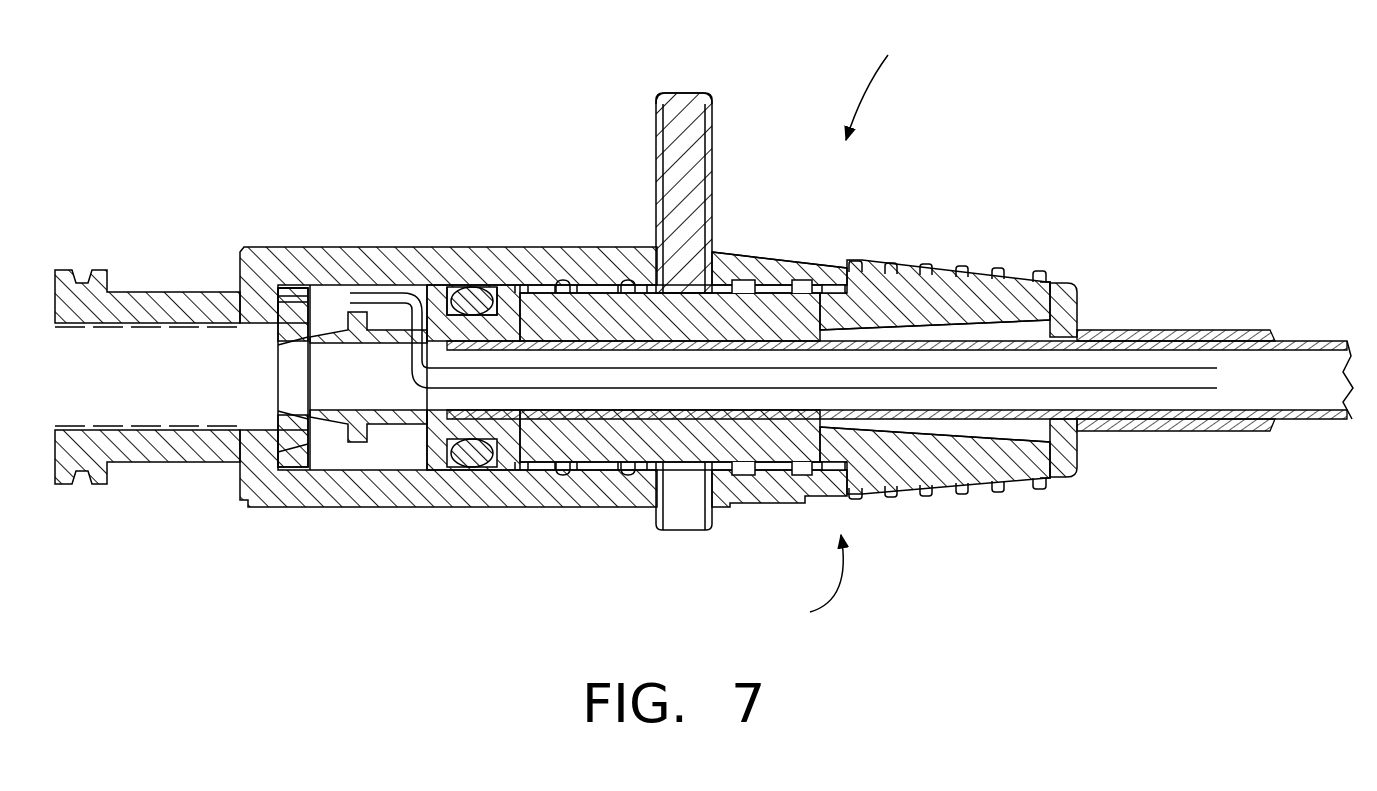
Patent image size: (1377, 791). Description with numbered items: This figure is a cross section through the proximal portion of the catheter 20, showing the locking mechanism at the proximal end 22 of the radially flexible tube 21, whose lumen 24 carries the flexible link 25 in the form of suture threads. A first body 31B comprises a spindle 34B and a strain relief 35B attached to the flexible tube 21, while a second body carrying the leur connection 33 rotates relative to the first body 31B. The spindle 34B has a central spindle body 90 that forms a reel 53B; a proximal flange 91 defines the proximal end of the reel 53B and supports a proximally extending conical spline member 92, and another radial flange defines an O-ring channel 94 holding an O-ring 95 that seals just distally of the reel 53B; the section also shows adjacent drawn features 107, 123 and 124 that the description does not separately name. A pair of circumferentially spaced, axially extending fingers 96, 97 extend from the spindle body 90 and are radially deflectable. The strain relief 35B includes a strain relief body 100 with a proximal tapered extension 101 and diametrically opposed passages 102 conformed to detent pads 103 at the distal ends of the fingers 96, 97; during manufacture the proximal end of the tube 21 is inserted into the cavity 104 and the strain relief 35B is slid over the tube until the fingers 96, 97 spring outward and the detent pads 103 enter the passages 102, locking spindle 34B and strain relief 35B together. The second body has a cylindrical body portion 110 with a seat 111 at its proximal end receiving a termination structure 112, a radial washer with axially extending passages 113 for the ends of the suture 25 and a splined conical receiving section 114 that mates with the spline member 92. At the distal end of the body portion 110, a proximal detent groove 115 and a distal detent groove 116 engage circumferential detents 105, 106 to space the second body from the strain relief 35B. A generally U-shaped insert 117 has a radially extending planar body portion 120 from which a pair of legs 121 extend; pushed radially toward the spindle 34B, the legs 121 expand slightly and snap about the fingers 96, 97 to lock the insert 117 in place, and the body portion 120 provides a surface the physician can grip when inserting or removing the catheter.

The catheter 20 is at (807, 583).
The radially flexible tube 21 is at (1295, 342).
The proximal end 22 is at (884, 83).
The lumen 24 is at (1270, 392).
The flexible link 25 is at (382, 293).
The first body 31B is at (835, 292).
The leur connection 33 is at (150, 292).
The spindle 34B is at (522, 298).
The strain relief 35B is at (975, 322).
The reel 53B is at (350, 420).
The central spindle body 90 is at (507, 467).
The proximal flange 91 is at (355, 305).
The conical spline member 92 is at (288, 420).
The O-ring channel 94 is at (452, 288).
The O-ring 95 is at (466, 300).
The finger 96 is at (900, 272).
The finger 97 is at (815, 470).
The strain relief body 100 is at (830, 252).
The proximal tapered extension 101 is at (1062, 300).
The passages 102 is at (1040, 271).
The detent pads 103 is at (957, 265).
The cavity 104 is at (607, 345).
The circumferential detent 105 is at (562, 288).
The circumferential detent 106 is at (640, 288).
The seal carrier 107 is at (463, 443).
The body portion 110 is at (275, 262).
The seat 111 is at (302, 290).
The termination structure 112 is at (185, 292).
The axially extending passages 113 is at (252, 262).
The splined conical receiving section 114 is at (237, 462).
The proximal detent groove 115 is at (528, 320).
The distal detent groove 116 is at (593, 290).
The insert 117 is at (680, 95).
The planar body portion 120 is at (680, 143).
The legs 121 is at (683, 520).
The stem wall 123 is at (686, 193).
The body extension 124 is at (716, 252).